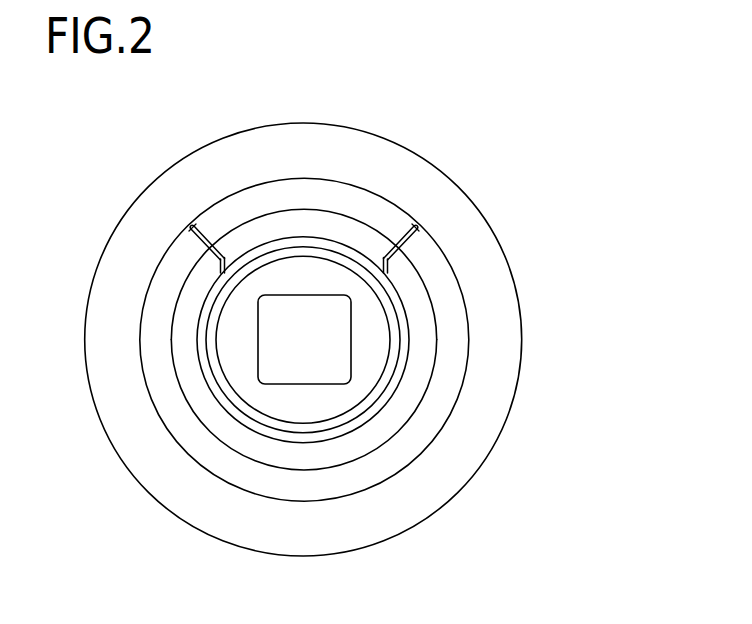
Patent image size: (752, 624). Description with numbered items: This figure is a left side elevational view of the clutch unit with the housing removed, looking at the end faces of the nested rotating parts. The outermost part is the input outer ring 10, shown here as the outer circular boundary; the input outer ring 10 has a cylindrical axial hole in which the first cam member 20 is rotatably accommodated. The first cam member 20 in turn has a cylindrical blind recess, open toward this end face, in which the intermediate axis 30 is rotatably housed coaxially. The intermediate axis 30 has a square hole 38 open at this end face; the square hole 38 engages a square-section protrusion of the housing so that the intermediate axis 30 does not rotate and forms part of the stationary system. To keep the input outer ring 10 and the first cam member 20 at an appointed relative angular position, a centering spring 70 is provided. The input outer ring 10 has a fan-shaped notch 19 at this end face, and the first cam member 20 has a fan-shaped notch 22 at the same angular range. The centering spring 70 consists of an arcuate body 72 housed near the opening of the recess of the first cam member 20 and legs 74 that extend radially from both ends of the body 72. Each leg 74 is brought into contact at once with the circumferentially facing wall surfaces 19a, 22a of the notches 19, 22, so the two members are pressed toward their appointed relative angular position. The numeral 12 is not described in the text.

The input outer ring 10 is at (330, 327).
The outer housing 12 is at (513, 358).
The fan-shaped notch 19 is at (331, 196).
The wall surface 19a is at (194, 230).
The first cam member 20 is at (357, 446).
The fan-shaped notch 22 is at (284, 220).
The wall surface 22a is at (226, 255).
The intermediate axis 30 is at (270, 402).
The square hole 38 is at (321, 352).
The centering spring 70 is at (412, 366).
The arcuate body 72 is at (396, 390).
The legs 74 is at (195, 247).